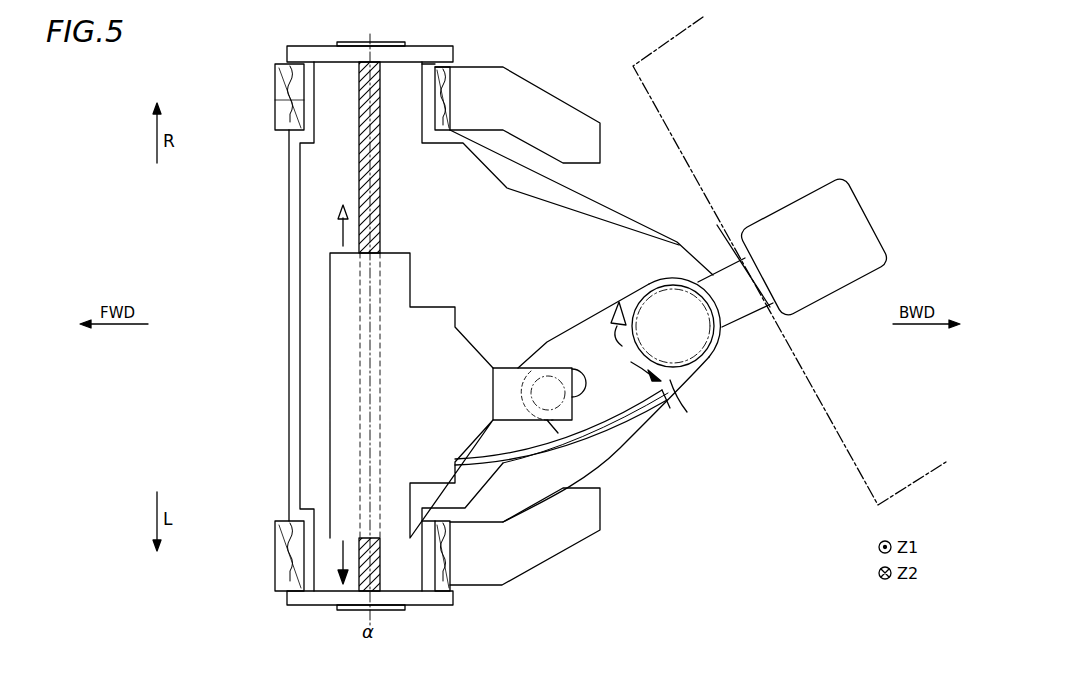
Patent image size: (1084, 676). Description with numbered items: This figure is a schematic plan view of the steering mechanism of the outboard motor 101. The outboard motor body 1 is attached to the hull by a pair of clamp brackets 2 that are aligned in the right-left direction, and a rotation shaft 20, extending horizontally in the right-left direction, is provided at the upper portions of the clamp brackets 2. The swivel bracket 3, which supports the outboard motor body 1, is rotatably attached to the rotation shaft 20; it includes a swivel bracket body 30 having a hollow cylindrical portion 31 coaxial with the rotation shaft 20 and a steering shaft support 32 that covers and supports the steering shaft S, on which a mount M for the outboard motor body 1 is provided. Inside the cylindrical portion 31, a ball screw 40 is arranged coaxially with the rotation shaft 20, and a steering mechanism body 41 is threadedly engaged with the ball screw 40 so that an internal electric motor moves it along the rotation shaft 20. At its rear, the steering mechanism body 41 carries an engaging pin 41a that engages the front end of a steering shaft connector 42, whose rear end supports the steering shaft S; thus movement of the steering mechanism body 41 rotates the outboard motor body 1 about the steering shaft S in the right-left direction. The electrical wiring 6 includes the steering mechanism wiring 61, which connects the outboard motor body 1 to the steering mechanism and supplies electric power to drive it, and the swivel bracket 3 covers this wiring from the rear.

The outboard motor 101 is at (148, 75).
The rotation shaft 20 is at (293, 97).
The swivel bracket 3 is at (253, 326).
The swivel bracket body 30 is at (283, 213).
The hollow cylindrical portion 31 is at (293, 242).
The ball screw 40 is at (382, 211).
The steering mechanism body 41 is at (458, 385).
The engaging pin 41a is at (548, 378).
The clamp brackets 2 is at (601, 133).
The steering shaft support 32 is at (690, 258).
The mount M is at (846, 190).
The steering shaft S is at (722, 346).
The steering shaft connector 42 is at (687, 412).
The electrical wiring 6 is at (671, 410).
The steering mechanism wiring 61 is at (648, 420).
The outboard motor body 1 is at (850, 452).